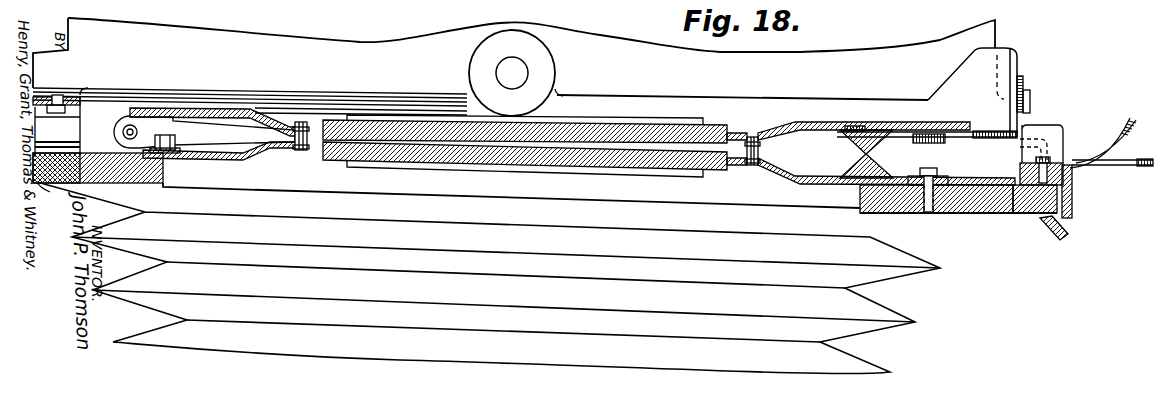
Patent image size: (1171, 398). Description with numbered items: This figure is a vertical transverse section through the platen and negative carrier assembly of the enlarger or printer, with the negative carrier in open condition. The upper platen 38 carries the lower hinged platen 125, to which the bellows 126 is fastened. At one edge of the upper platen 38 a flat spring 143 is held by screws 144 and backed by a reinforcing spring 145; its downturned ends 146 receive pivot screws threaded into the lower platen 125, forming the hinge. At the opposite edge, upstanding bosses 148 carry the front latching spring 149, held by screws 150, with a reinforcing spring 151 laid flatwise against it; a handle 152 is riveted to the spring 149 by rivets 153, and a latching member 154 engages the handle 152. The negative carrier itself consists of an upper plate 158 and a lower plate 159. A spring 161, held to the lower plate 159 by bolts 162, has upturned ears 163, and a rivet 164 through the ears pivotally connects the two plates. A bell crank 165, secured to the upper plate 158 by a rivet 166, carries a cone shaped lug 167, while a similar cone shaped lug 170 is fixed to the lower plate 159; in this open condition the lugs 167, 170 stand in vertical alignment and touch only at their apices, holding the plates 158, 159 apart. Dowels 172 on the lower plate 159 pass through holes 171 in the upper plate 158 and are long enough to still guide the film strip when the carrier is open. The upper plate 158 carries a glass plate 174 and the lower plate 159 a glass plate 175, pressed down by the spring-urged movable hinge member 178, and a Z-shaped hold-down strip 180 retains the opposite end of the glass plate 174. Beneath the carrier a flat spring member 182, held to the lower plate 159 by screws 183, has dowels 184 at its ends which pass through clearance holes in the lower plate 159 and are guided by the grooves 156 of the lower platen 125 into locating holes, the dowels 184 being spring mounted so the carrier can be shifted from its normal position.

The upper platen 38 is at (393, 47).
The lower hinged platen 125 is at (1030, 212).
The bellows 126 is at (917, 322).
The flat spring 143 is at (67, 145).
The screws 144 is at (57, 94).
The reinforcing spring 145 is at (67, 121).
The downturned ends 146 is at (65, 192).
The upstanding bosses 148 is at (1010, 52).
The front latching spring 149 is at (1048, 126).
The screws 150 is at (1029, 93).
The bracket block 151 is at (1020, 176).
The handle 152 is at (1125, 131).
The rivets 153 is at (1046, 158).
The latching member 154 is at (1055, 228).
The grooves 156 is at (990, 200).
The upper plate 158 is at (220, 108).
The lower plate 159 is at (230, 158).
The spring 161 is at (180, 153).
The bolts 162 is at (168, 157).
The upturned ears 163 is at (163, 129).
The rivet 164 is at (131, 124).
The bell crank 165 is at (1135, 166).
The rivet 166 is at (940, 141).
The cone shaped lug 167 is at (848, 146).
The cone shaped lug 170 is at (850, 163).
The holes 171 is at (297, 125).
The dowels 172 is at (303, 126).
The glass plate 174 is at (572, 127).
The glass plate 175 is at (475, 160).
The movable hinge member 178 is at (643, 116).
The hold-down strip 180 is at (578, 170).
The flat spring member 182 is at (950, 181).
The screws 183 is at (948, 167).
The dowels 184 is at (930, 213).